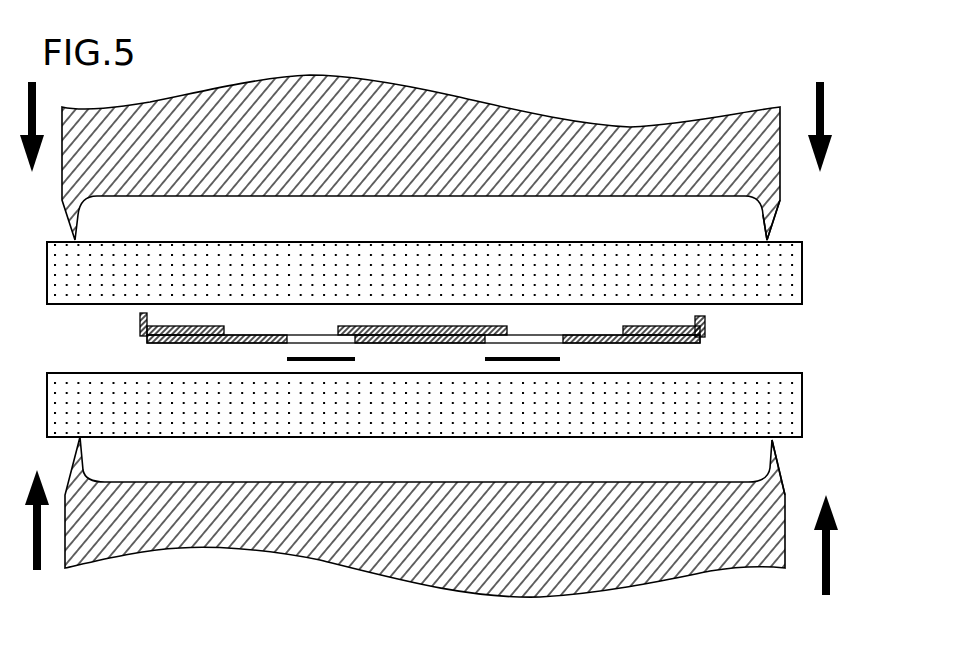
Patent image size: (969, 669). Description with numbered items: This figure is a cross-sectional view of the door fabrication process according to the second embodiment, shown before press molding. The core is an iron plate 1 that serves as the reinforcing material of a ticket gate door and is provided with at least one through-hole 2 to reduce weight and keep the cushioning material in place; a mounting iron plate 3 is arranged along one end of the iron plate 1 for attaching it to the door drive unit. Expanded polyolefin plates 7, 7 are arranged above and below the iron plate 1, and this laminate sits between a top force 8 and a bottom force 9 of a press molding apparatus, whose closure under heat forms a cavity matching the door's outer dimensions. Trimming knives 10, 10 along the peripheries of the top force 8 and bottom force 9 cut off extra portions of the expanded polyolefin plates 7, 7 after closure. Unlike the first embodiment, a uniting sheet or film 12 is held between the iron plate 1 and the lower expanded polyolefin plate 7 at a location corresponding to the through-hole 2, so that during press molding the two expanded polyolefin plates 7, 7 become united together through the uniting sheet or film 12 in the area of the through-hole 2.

The iron plate 1 is at (680, 345).
The through-hole 2 is at (528, 339).
The mounting iron plate 3 is at (680, 322).
The expanded polyolefin plate 7 is at (806, 272).
The top force 8 is at (655, 158).
The bottom force 9 is at (707, 541).
The trimming knife 10 is at (775, 238).
The uniting sheet or film 12 is at (512, 361).